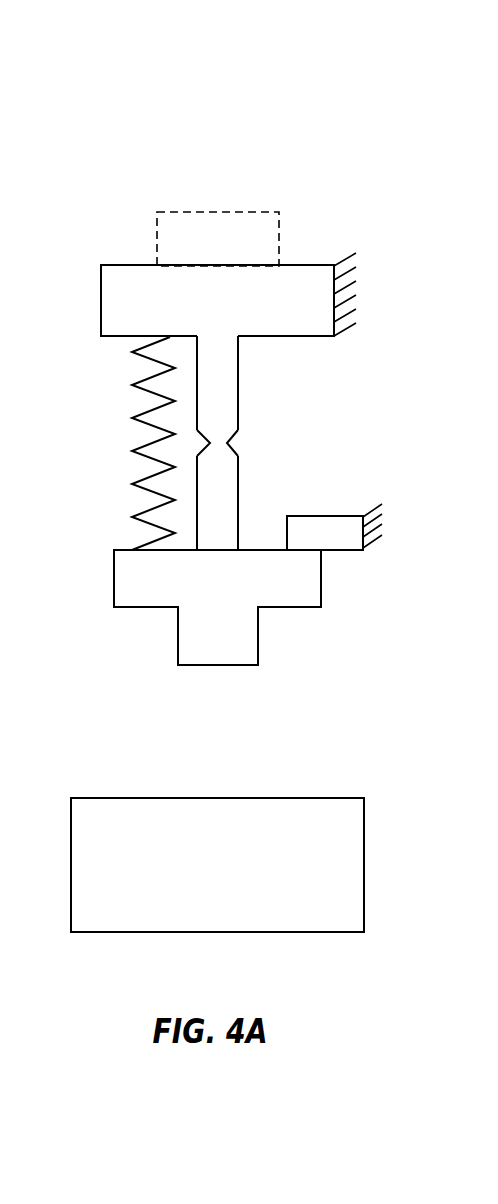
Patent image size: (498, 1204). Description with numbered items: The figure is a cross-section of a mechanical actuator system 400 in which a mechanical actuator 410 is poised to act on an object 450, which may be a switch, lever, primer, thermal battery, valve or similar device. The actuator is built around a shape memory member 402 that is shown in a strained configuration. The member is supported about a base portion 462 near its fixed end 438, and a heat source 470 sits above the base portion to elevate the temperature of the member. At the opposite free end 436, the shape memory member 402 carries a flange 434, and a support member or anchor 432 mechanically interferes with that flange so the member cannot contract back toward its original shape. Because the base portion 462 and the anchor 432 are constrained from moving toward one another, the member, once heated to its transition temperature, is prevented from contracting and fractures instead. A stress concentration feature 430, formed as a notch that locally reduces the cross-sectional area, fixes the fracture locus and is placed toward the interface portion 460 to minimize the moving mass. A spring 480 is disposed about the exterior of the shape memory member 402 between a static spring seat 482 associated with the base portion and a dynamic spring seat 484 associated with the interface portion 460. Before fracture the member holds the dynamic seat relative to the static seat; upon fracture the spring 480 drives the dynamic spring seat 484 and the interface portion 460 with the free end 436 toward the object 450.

The mechanical actuator system 400 is at (111, 75).
The mechanical actuator 410 is at (126, 209).
The heat source 470 is at (234, 212).
The base portion 462 is at (318, 336).
The shape memory member 402 is at (239, 407).
The fixed end 438 is at (256, 343).
The stress concentration feature 430 is at (246, 441).
The free end 436 is at (249, 539).
The spring 480 is at (133, 450).
The static spring seat 482 is at (121, 338).
The dynamic spring seat 484 is at (123, 550).
The support member or anchor 432 is at (332, 516).
The flange 434 is at (321, 582).
The interface portion 460 is at (260, 686).
The object 450 is at (217, 865).